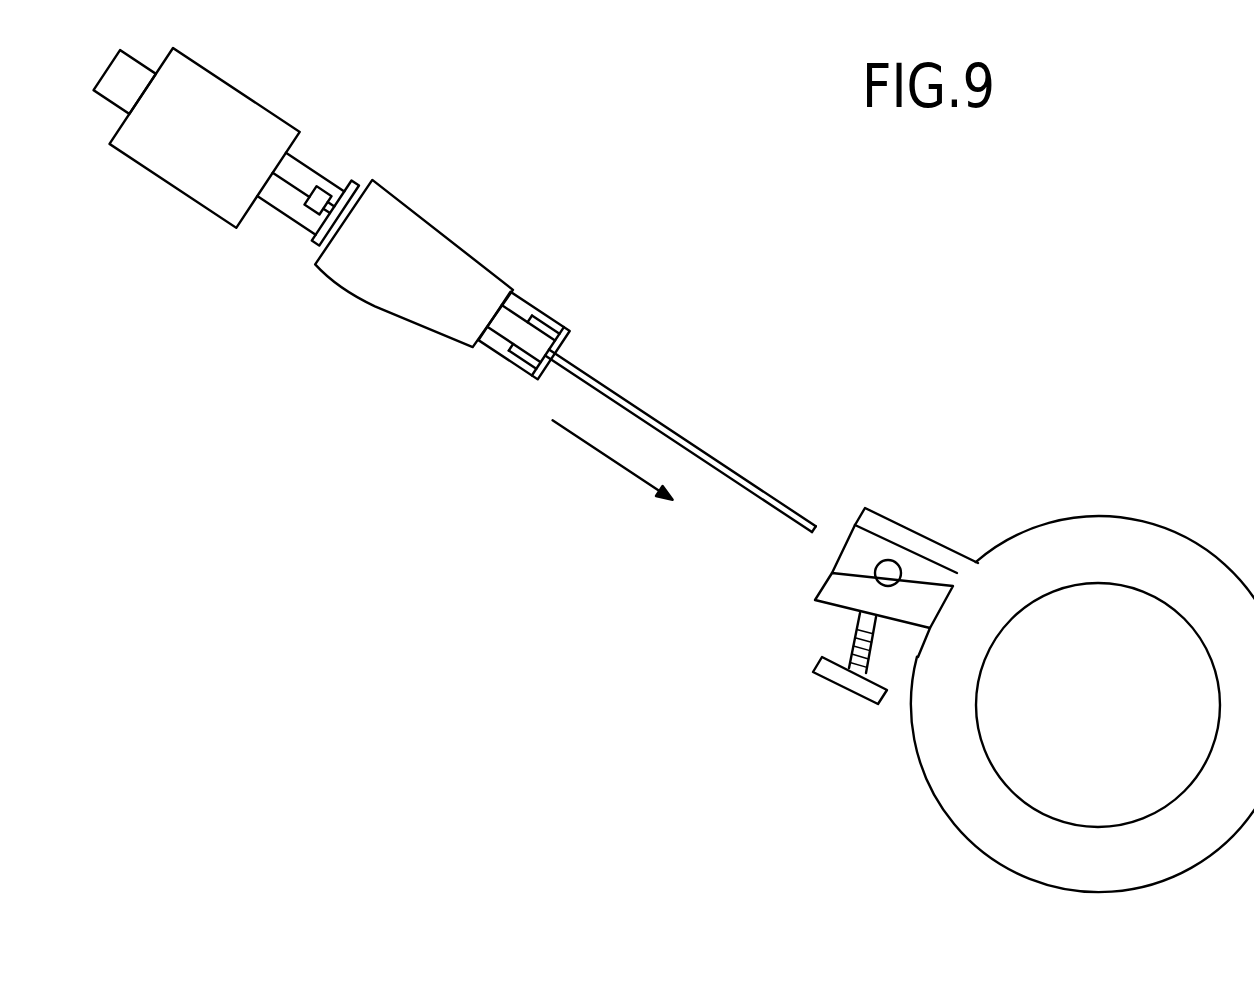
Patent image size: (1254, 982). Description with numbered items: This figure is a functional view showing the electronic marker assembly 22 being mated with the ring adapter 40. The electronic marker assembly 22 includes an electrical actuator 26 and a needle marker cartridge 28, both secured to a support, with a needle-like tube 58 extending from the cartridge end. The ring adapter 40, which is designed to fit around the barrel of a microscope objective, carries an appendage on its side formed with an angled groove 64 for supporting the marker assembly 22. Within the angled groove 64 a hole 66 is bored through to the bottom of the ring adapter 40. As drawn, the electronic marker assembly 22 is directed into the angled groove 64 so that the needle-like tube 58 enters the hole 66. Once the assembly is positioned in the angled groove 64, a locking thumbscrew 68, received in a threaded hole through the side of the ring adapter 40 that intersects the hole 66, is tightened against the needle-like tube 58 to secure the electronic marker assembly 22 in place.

The electronic marker assembly 22 is at (348, 332).
The electrical actuator 26 is at (238, 90).
The needle marker cartridge 28 is at (419, 215).
The needle-like tube 58 is at (673, 428).
The ring adapter 40 is at (1162, 519).
The angled groove 64 is at (855, 566).
The hole 66 is at (900, 572).
The locking thumbscrew 68 is at (848, 678).